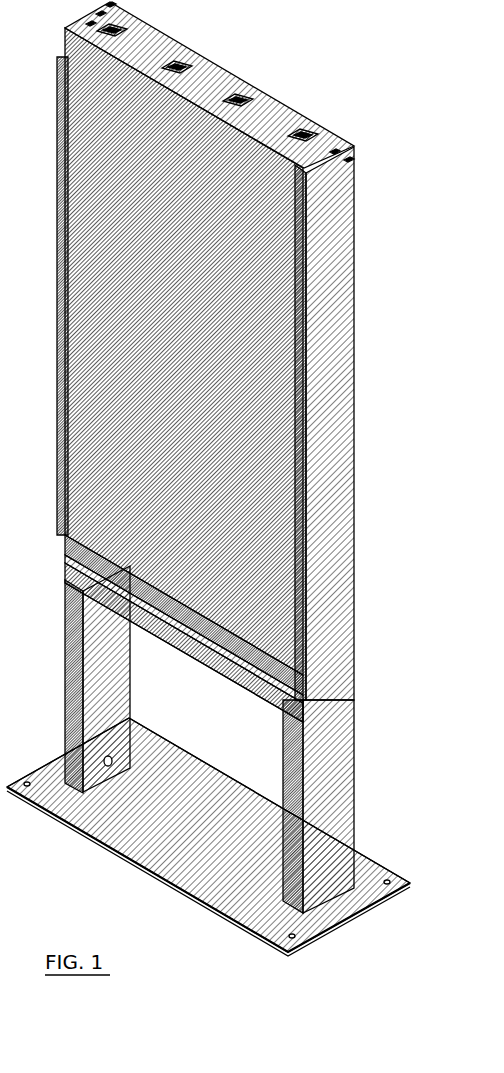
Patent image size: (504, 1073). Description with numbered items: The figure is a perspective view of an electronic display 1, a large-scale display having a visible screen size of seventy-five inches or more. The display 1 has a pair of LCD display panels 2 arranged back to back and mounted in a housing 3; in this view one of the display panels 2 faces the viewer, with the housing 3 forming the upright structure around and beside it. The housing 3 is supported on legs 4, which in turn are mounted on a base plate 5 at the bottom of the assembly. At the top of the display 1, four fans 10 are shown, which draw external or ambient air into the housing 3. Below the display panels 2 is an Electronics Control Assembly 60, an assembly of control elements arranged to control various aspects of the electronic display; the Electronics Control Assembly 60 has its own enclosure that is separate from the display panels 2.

The electronic display 1 is at (390, 350).
The LCD display panels 2 is at (238, 410).
The housing 3 is at (328, 282).
The legs 4 is at (325, 782).
The base plate 5 is at (367, 878).
The fans 10 is at (240, 100).
The Electronics Control Assembly (ECA) 60 is at (255, 675).